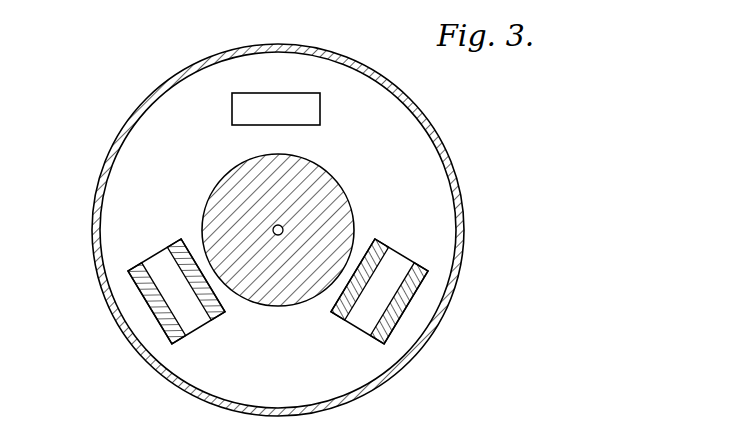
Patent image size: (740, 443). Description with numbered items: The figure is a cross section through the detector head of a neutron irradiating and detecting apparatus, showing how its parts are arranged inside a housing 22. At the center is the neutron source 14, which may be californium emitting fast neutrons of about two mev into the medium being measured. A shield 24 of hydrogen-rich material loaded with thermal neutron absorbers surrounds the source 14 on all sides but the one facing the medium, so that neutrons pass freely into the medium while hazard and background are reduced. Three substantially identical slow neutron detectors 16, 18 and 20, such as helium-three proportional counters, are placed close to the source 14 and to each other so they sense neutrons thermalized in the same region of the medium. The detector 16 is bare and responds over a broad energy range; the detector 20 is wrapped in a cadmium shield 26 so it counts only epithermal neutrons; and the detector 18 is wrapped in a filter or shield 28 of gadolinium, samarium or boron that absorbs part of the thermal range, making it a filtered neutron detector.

The neutron source 14 is at (276, 226).
The slow neutron detector 16 is at (320, 92).
The slow neutron detector 18 is at (195, 338).
The slow neutron detector 20 is at (367, 338).
The housing 22 is at (455, 173).
The shield 24 is at (332, 177).
The shield 26 is at (335, 312).
The filter or shield 28 is at (222, 313).